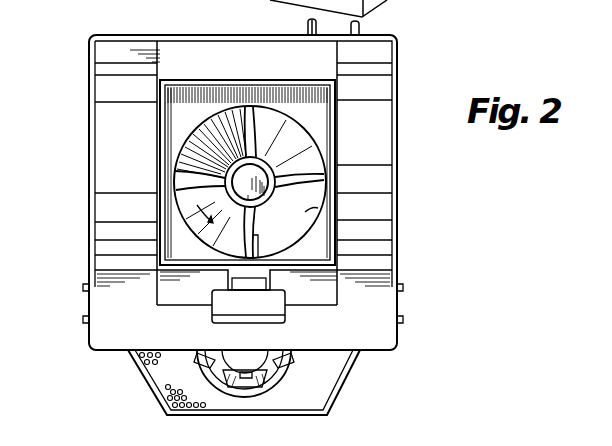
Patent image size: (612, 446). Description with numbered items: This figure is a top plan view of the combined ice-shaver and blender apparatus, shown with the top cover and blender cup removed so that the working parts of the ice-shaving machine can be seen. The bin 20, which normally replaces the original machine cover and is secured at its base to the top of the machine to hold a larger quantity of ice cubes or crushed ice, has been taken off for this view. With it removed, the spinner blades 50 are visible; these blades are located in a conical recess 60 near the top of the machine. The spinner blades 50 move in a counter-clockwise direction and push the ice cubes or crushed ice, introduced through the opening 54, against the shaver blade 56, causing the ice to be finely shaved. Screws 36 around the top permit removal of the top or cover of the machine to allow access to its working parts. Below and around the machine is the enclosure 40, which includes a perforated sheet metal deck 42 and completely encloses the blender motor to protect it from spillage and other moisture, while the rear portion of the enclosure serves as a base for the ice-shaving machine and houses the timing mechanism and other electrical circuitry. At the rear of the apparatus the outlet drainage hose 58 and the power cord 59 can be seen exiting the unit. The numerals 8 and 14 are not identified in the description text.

The appliance assembly 8 is at (361, 11).
The motor 14 is at (300, 363).
The bin 20 is at (340, 127).
The screws 36 is at (416, 320).
The enclosure 40 is at (333, 400).
The perforated sheet metal deck 42 is at (167, 387).
The spinner blades 50 is at (300, 168).
The opening 54 is at (303, 205).
The shaver blade 56 is at (258, 244).
The outlet drainage hose 58 is at (305, 24).
The power cord 59 is at (360, 30).
The conical recess 60 is at (300, 154).